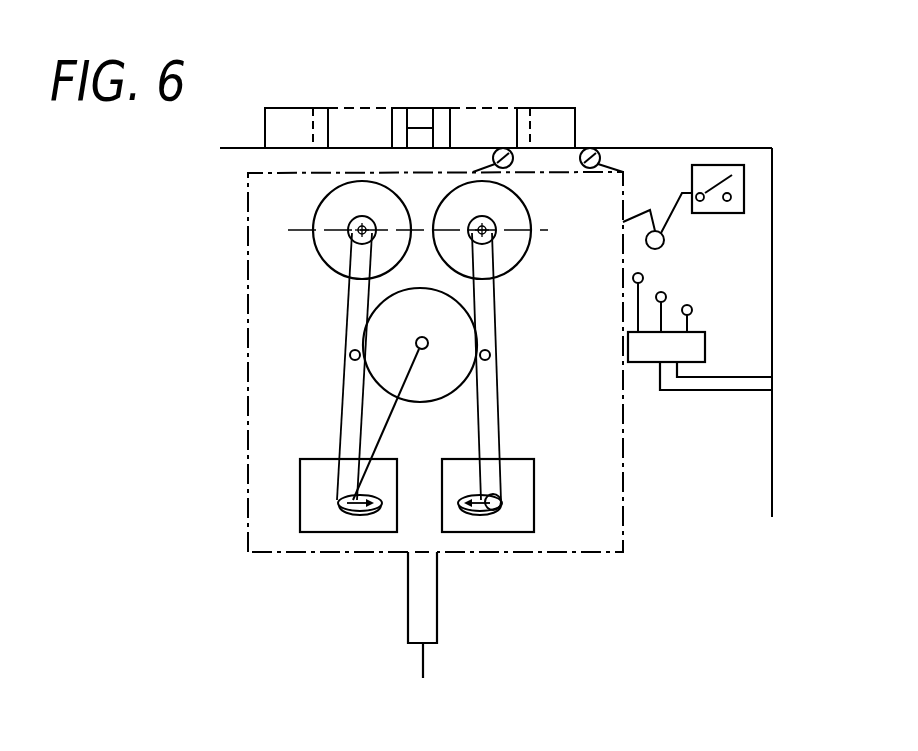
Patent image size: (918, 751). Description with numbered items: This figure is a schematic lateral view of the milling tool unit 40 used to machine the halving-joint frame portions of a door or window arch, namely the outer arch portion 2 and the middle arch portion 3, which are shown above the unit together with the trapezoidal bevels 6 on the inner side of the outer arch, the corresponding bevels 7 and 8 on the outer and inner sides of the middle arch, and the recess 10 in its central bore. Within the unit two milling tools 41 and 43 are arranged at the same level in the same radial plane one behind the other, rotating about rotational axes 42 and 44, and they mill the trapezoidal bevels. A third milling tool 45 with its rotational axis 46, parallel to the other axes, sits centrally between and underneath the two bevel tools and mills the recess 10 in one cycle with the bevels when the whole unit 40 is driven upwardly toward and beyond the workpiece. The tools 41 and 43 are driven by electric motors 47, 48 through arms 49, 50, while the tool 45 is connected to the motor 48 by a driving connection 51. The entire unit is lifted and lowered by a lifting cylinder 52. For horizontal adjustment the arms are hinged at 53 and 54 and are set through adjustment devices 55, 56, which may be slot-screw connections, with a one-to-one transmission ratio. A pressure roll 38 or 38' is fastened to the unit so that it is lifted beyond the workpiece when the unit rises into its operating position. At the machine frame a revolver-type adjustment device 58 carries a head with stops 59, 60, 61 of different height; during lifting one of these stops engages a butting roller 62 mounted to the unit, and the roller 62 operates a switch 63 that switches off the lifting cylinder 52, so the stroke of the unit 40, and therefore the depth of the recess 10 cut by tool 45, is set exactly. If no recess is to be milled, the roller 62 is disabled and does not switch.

The outer arch portion 2 is at (278, 108).
The middle arch portion 3 is at (410, 130).
The trapezoidal bevels 6 is at (320, 108).
The bevels 7 is at (400, 128).
The bevels 8 is at (450, 108).
The recess 10 is at (420, 140).
The pressure roll 38 is at (513, 84).
The pressure roll 38' is at (622, 129).
The milling tool unit 40 is at (248, 343).
The milling tool 41 is at (517, 255).
The rotational axis 42 is at (495, 220).
The milling tool 43 is at (333, 197).
The rotational axis 44 is at (362, 236).
The milling tool 45 is at (447, 373).
The rotational axis 46 is at (428, 340).
The electric motor 47 is at (510, 522).
The electric motor 48 is at (362, 520).
The arm 49 is at (490, 302).
The arm 50 is at (353, 307).
The driving connection 51 is at (382, 433).
The lifting cylinder 52 is at (423, 615).
The hinge 53 is at (493, 355).
The hinge 54 is at (350, 358).
The adjustment device 55 is at (468, 512).
The adjustment device 56 is at (377, 512).
The revolver-type adjustment device 58 is at (643, 363).
The stop 59 is at (643, 276).
The stop 60 is at (667, 295).
The stop 61 is at (693, 310).
The butting roller 62 is at (665, 242).
The switch 63 is at (715, 165).